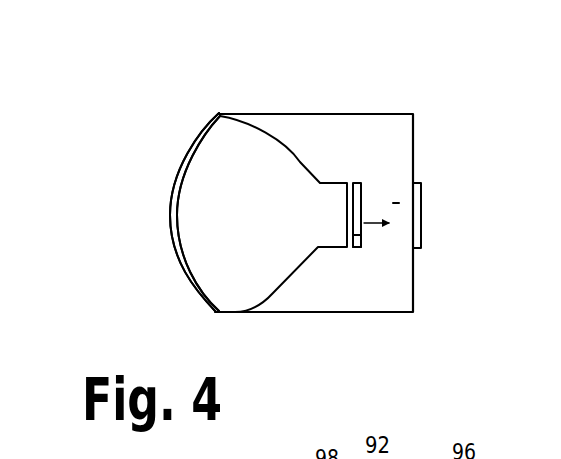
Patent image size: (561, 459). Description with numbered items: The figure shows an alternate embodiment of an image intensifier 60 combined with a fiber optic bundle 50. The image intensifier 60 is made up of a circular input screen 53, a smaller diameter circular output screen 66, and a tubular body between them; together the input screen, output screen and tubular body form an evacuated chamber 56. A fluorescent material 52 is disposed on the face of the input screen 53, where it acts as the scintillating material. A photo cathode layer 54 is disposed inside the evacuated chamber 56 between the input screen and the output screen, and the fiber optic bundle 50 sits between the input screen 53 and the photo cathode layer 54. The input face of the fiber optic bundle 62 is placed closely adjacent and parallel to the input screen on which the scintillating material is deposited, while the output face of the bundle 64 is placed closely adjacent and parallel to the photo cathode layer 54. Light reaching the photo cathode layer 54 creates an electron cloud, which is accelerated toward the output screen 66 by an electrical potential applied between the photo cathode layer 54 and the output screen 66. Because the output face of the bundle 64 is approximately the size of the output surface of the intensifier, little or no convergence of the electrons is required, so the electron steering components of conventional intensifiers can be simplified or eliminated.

The image intensifier 60 is at (233, 103).
The fiber optic bundle 50 is at (258, 170).
The evacuated chamber 56 is at (332, 140).
The photo cathode layer 54 is at (362, 200).
The output face of the bundle 64 is at (362, 235).
The output screen 66 is at (421, 212).
The input screen 53 is at (172, 232).
The fluorescent material 52 is at (179, 265).
The input face of the fiber optic bundle 62 is at (179, 213).